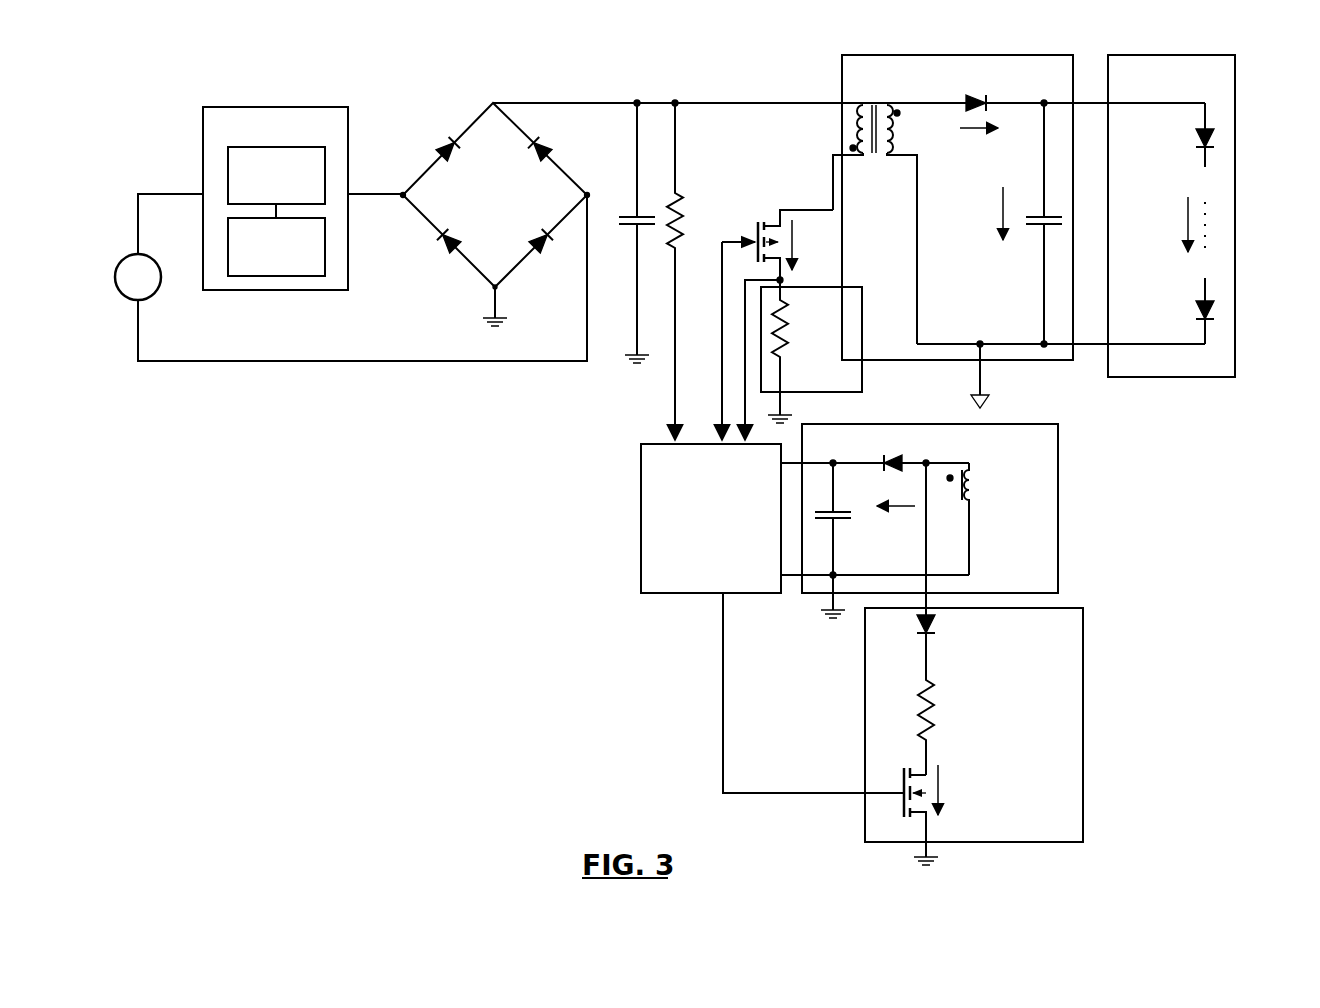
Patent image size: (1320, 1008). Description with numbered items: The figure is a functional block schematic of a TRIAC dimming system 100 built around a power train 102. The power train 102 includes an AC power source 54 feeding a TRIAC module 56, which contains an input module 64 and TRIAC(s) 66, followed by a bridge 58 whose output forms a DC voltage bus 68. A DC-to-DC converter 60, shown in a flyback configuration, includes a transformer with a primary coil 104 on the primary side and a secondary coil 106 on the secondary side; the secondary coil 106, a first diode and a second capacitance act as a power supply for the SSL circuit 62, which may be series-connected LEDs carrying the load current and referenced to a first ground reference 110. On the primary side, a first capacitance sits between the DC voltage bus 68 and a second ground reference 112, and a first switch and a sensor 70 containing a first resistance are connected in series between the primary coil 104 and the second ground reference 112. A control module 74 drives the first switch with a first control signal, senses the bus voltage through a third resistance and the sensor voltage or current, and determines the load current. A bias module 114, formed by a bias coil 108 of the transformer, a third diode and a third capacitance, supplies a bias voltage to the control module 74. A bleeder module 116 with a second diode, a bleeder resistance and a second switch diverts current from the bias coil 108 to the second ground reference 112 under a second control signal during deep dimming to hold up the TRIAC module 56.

The TRIAC dimming system 100 is at (186, 62).
The AC power source 54 is at (130, 254).
The TRIAC module 56 is at (254, 194).
The bridge 58 is at (466, 102).
The DC-to-DC converter 60 is at (997, 228).
The SSL circuit 62 is at (1176, 378).
The input module 64 is at (228, 160).
The TRIAC(s) 66 is at (276, 290).
The DC voltage bus 68 is at (582, 103).
The sensor 70 is at (862, 370).
The control module 74 is at (641, 480).
The power train 102 is at (1211, 236).
The primary coil 104 is at (853, 152).
The secondary coil 106 is at (889, 156).
The bias coil 108 is at (984, 470).
The first ground reference 110 is at (986, 398).
The second ground reference 112 is at (630, 356).
The bias module 114 is at (953, 519).
The bleeder module 116 is at (1083, 670).